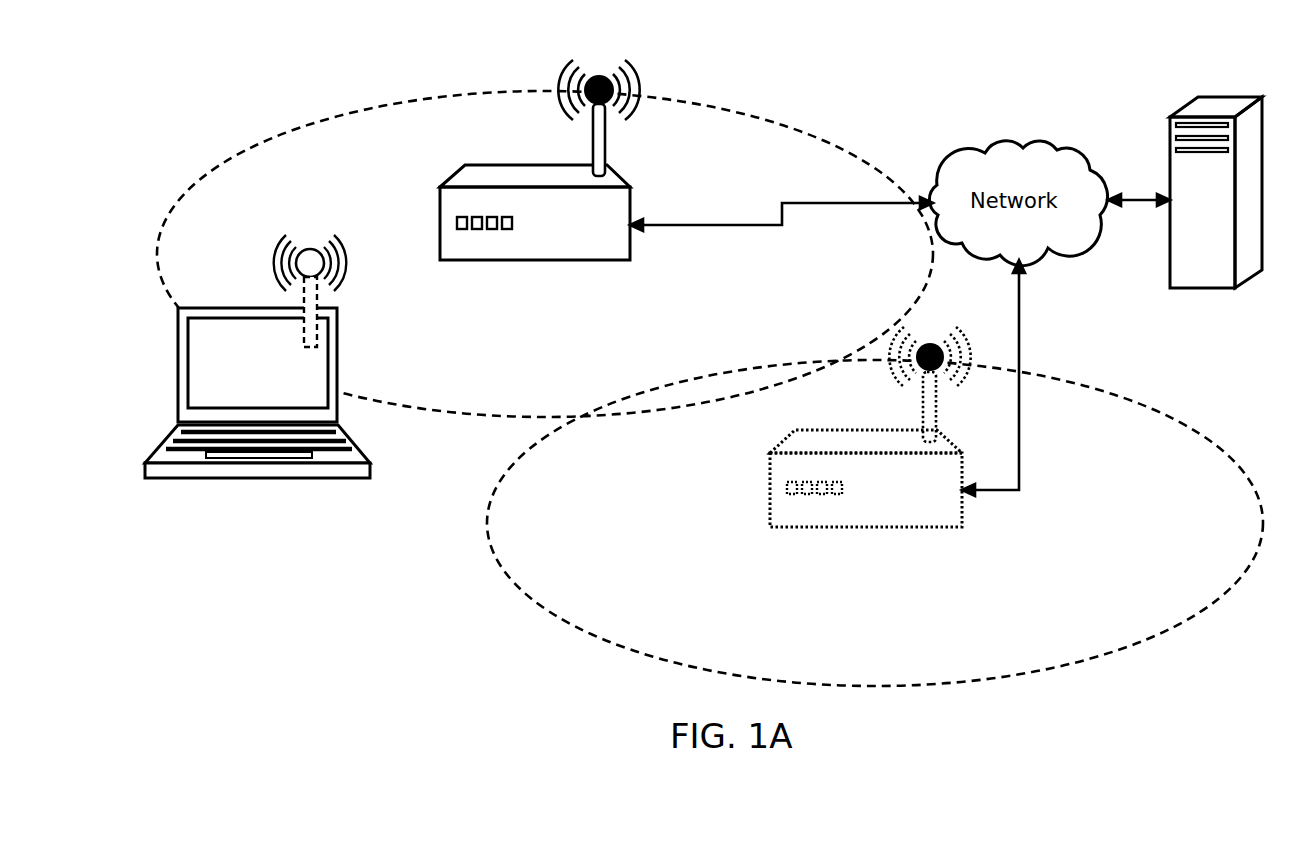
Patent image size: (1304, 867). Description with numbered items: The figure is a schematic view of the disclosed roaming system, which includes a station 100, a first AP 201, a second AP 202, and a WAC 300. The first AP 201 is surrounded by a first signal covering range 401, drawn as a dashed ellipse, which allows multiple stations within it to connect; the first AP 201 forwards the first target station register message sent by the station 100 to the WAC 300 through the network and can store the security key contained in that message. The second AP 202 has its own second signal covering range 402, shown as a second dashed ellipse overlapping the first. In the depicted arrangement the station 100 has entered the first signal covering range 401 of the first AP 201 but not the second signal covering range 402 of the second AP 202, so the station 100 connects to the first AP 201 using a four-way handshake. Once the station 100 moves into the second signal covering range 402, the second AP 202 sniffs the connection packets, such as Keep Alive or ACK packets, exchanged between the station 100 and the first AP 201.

The station 100 is at (257, 480).
The first AP 201 is at (540, 160).
The second AP 202 is at (870, 427).
The WAC 300 is at (1216, 192).
The first signal covering range 401 is at (818, 138).
The second signal covering range 402 is at (603, 635).